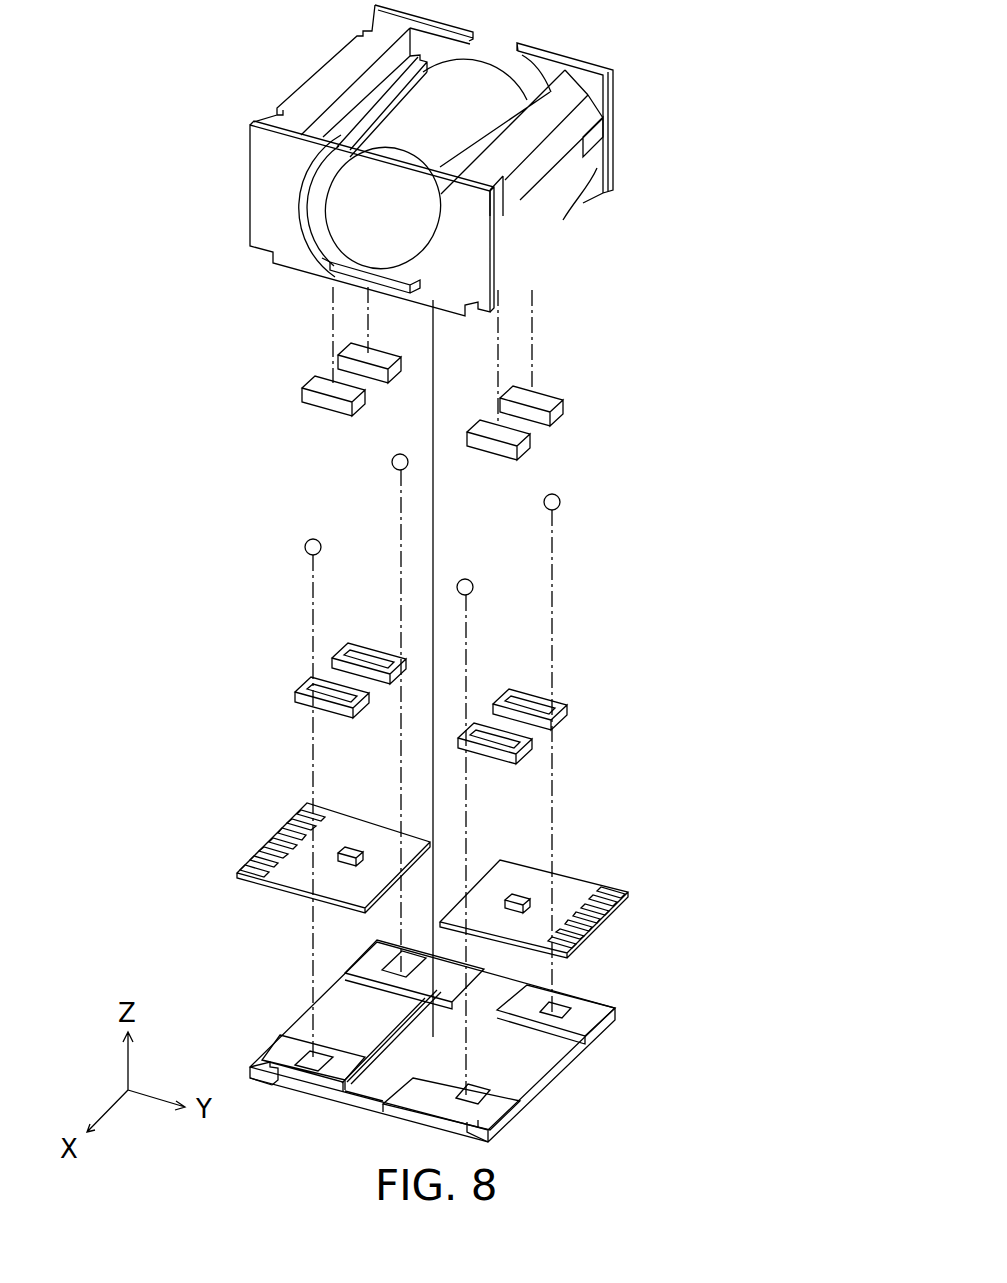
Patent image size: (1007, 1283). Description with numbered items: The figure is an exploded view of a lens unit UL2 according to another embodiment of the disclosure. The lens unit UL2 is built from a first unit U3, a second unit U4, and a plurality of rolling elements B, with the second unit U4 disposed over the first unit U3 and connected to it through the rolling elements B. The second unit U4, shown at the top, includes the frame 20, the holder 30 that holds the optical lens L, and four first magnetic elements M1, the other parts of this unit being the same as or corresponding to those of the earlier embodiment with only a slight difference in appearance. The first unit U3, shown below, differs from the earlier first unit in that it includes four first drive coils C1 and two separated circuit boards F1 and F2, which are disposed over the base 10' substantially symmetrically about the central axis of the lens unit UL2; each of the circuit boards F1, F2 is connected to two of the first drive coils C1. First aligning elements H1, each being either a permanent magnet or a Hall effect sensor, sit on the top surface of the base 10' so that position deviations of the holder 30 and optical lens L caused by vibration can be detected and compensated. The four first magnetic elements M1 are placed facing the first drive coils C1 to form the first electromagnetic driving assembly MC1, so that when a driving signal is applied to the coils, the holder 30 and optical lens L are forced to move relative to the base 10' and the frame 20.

The lens unit UL2 is at (172, 28).
The frame 20 is at (272, 204).
The optical lens L is at (352, 213).
The holder 30 is at (540, 213).
The first magnetic element M1 is at (318, 398).
The first electromagnetic driving assembly MC1 is at (146, 354).
The rolling element B is at (392, 462).
The first drive coil C1 is at (349, 645).
The first aligning element H1 is at (347, 850).
The circuit board F1 is at (565, 880).
The circuit board F2 is at (283, 873).
The base 10' is at (432, 1054).
The second unit U4 is at (650, 2).
The first unit U3 is at (650, 650).